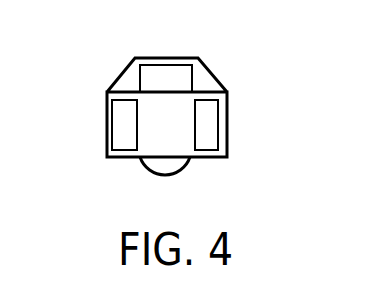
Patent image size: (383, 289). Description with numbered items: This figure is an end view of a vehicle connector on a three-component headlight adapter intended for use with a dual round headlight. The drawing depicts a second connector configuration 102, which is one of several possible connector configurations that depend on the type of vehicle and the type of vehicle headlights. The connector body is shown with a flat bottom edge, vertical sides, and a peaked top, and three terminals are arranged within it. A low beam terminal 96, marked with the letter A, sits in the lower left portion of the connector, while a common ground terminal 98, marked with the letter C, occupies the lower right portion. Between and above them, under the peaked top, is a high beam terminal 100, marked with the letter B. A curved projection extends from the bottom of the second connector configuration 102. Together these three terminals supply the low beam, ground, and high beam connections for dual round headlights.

The high beam terminal 100 is at (181, 72).
The low beam terminal 96 is at (115, 145).
The common ground terminal 98 is at (216, 144).
The second connector configuration 102 is at (133, 159).